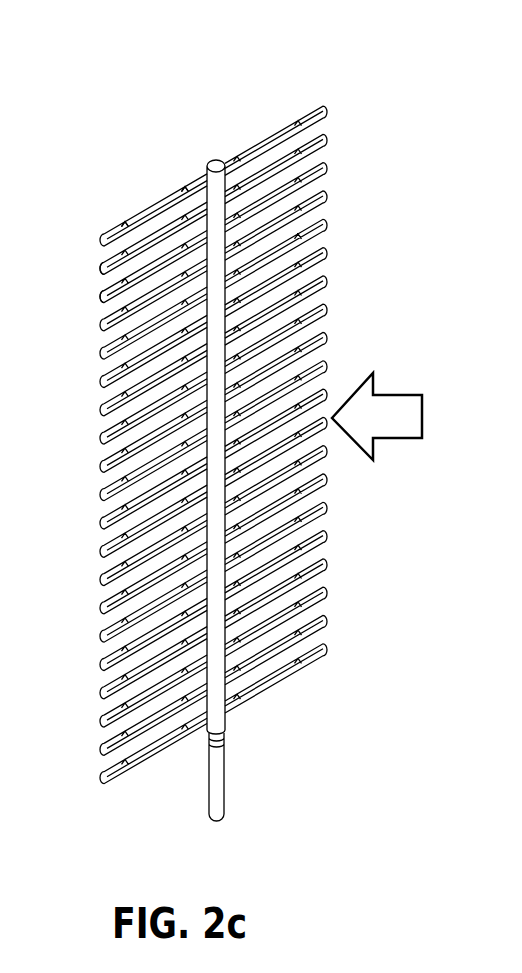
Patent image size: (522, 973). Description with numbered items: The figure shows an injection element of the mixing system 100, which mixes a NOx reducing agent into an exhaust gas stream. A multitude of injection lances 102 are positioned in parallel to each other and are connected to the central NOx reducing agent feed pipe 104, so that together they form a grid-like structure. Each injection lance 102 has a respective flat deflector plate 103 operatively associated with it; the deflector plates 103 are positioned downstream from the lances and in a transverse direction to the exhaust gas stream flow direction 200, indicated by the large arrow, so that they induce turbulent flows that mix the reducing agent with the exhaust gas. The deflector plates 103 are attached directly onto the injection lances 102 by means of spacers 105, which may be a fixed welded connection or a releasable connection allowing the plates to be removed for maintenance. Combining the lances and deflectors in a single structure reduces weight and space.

The mixing system 100 is at (213, 162).
The injection lance 102 is at (109, 553).
The deflector plate 103 is at (101, 295).
The central NOx reducing agent feed pipe 104 is at (215, 767).
The spacer 105 is at (183, 189).
The exhaust gas stream flow direction 200 is at (377, 416).